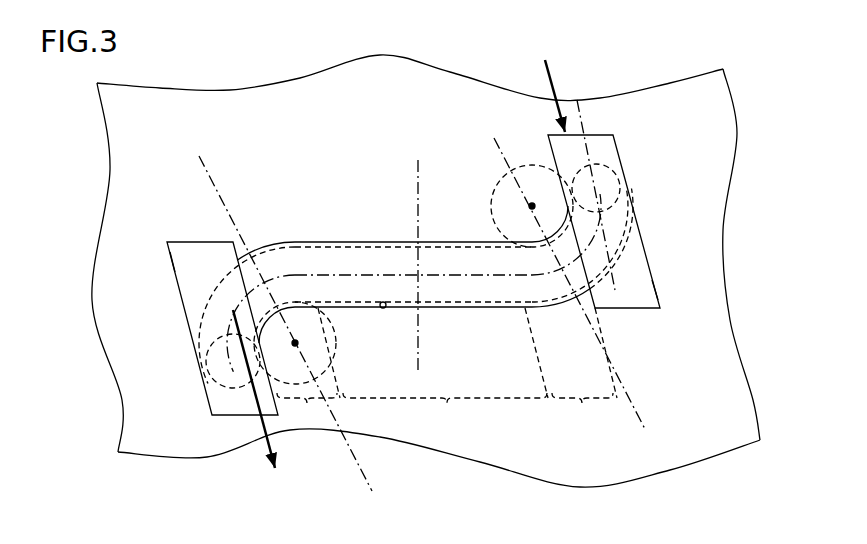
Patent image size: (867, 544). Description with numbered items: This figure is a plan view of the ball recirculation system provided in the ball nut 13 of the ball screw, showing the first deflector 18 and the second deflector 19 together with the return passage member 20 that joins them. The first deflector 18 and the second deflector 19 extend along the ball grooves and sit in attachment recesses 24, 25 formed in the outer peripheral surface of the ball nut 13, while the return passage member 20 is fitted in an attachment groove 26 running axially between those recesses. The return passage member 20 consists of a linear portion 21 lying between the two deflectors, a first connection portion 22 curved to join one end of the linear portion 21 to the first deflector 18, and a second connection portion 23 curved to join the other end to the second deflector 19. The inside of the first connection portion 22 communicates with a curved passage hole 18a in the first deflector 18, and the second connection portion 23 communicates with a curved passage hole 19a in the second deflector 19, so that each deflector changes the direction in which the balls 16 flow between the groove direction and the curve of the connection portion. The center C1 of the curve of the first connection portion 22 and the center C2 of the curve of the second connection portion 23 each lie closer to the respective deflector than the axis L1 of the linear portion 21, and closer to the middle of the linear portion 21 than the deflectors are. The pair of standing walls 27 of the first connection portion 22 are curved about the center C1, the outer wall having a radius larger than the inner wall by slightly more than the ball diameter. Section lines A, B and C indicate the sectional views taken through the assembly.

The ball nut 13 is at (730, 327).
The balls 16 is at (555, 176).
The first deflector 18 is at (640, 228).
The passage hole 18a is at (604, 252).
The second deflector 19 is at (191, 341).
The passage hole 19a is at (208, 312).
The return passage member 20 is at (447, 240).
The linear portion 21 is at (445, 372).
The first connection portion 22 is at (584, 372).
The second connection portion 23 is at (308, 372).
The attachment recess 24 is at (655, 290).
The attachment recess 25 is at (173, 263).
The attachment groove 26 is at (383, 309).
The standing walls 27 is at (263, 250).
The axis of the linear portion L1 is at (450, 279).
The center of the curve of the centerline of the first connection portion C1 is at (530, 208).
The center of the curve of the centerline of the second connection portion C2 is at (294, 346).
The section line A- A is at (495, 138).
The section line B- B is at (198, 157).
The section line C- C is at (421, 172).